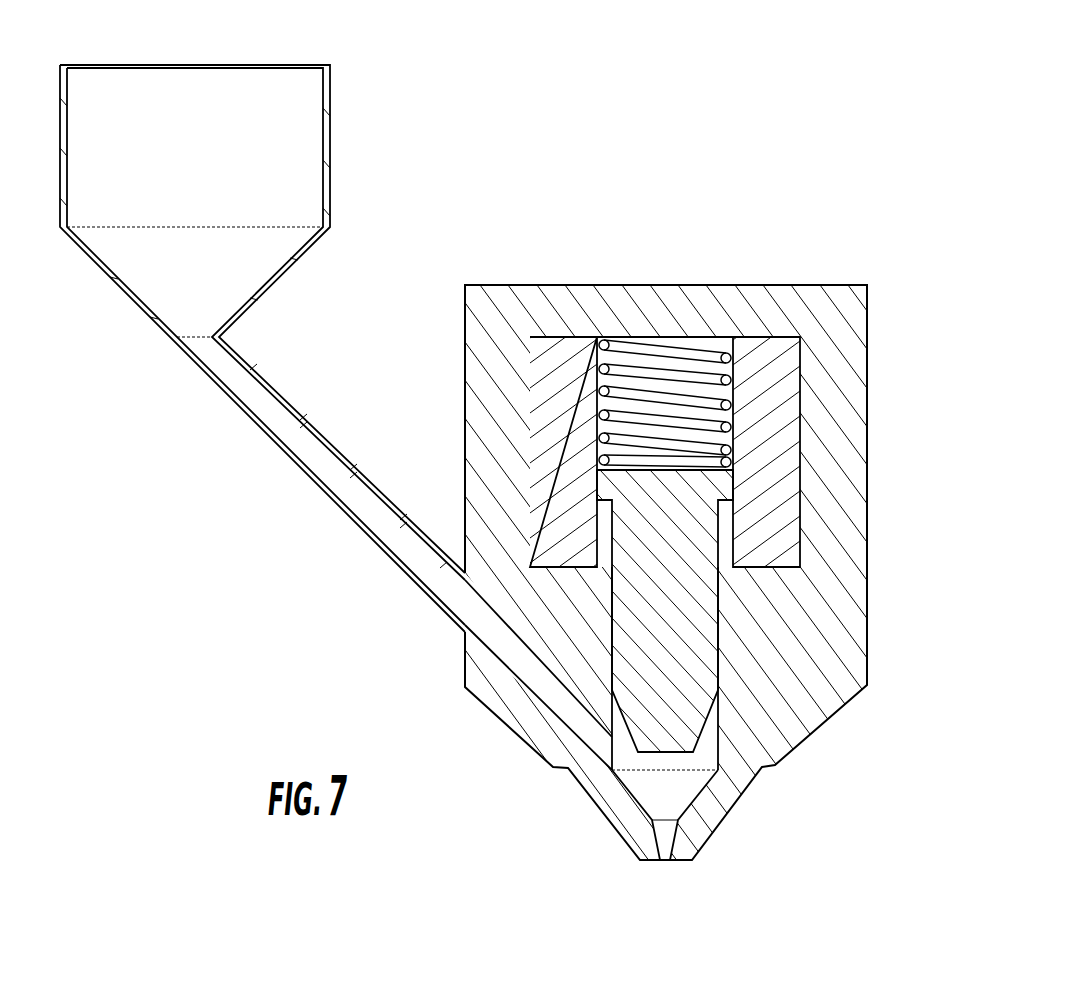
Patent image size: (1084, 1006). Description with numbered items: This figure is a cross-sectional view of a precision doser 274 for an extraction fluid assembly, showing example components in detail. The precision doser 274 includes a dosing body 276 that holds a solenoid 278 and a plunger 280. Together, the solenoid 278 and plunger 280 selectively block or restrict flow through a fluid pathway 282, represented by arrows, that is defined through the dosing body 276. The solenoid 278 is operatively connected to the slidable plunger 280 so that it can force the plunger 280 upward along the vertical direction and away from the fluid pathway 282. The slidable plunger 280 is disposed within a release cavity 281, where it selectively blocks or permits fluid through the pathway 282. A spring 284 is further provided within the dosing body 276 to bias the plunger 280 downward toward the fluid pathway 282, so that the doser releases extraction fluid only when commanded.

The precision doser 274 is at (635, 120).
The dosing body 276 is at (858, 440).
The solenoid 278 is at (782, 387).
The plunger 280 is at (703, 648).
The release cavity 281 is at (710, 774).
The fluid pathway 282 is at (194, 103).
The spring 284 is at (706, 355).